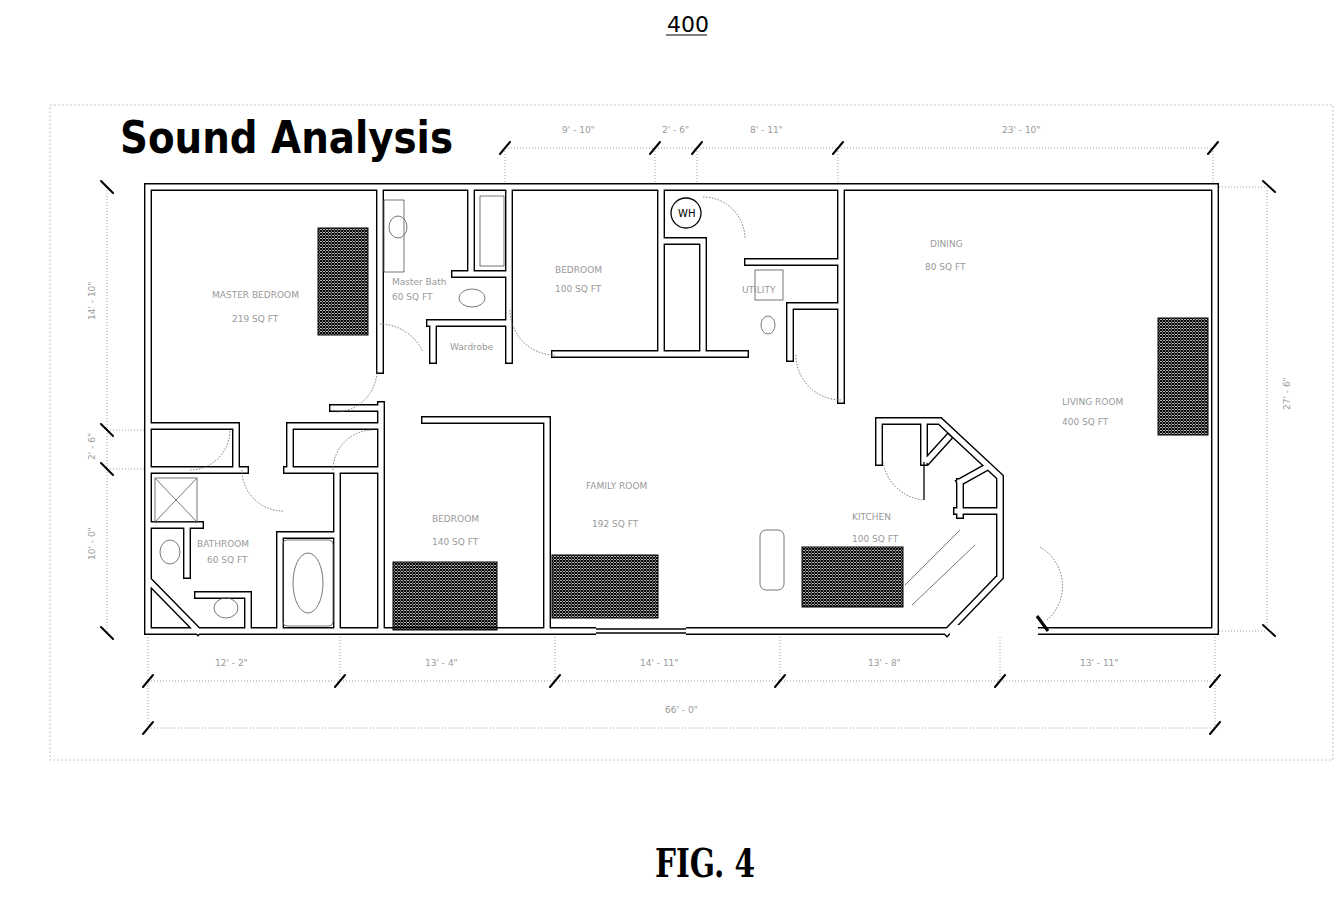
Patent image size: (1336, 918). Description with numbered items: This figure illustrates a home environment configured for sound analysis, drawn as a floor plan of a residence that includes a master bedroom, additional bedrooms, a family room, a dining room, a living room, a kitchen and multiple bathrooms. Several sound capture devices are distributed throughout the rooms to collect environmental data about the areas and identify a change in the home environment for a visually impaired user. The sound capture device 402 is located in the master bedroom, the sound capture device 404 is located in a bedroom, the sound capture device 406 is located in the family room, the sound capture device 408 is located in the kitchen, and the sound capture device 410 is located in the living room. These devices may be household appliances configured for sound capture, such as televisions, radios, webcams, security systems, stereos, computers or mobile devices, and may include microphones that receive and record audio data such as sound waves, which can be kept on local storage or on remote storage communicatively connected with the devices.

The sound capture device 402 is at (318, 281).
The sound capture device 404 is at (452, 567).
The sound capture device 406 is at (650, 567).
The sound capture device 408 is at (893, 590).
The sound capture device 410 is at (1163, 362).